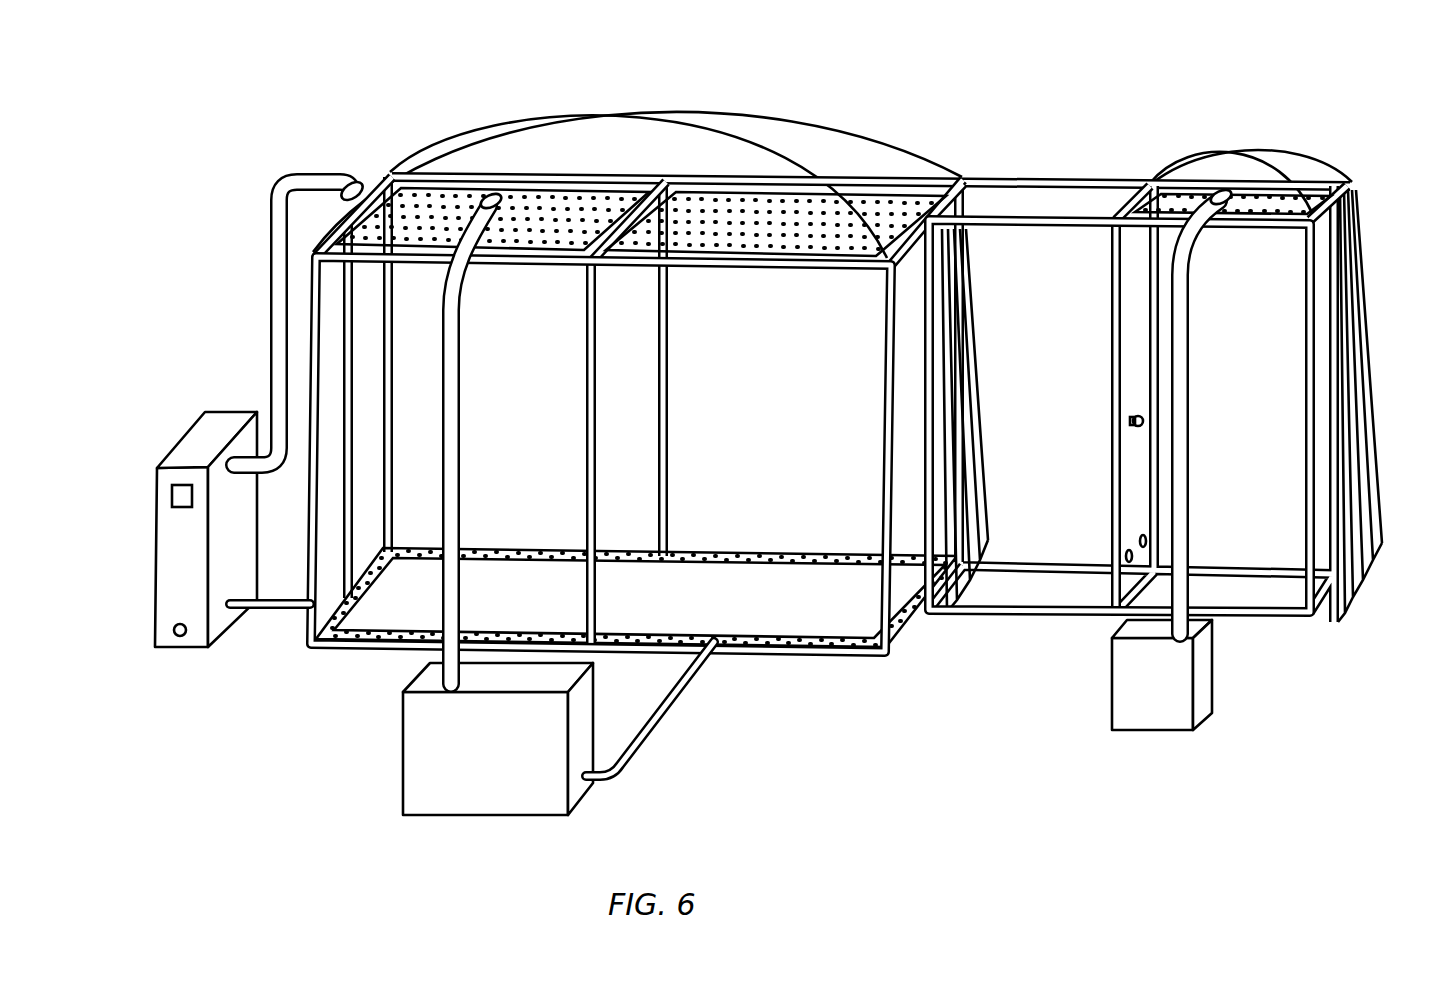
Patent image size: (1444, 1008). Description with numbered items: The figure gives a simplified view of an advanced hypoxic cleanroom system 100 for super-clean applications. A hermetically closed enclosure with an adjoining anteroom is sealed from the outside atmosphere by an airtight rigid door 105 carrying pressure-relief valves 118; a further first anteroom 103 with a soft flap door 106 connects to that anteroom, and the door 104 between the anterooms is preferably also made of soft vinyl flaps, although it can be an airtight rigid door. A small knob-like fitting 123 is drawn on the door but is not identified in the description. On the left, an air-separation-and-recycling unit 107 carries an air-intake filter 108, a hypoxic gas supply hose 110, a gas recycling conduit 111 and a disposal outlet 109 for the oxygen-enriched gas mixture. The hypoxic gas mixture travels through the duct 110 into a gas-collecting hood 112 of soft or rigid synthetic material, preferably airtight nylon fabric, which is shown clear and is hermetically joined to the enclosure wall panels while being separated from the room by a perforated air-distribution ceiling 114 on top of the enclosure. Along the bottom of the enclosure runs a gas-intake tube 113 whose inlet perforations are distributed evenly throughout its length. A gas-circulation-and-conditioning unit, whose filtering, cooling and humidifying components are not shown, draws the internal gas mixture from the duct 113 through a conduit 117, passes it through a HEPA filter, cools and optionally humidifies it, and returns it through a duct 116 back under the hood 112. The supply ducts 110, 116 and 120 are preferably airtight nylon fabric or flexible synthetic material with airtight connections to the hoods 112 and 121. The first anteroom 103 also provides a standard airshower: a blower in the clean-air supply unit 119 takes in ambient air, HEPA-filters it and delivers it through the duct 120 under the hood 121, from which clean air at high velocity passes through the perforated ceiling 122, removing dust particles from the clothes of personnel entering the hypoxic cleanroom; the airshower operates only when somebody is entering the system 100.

The advanced hypoxic cleanroom system 100 is at (292, 98).
The first anteroom 103 is at (1258, 598).
The door 104 is at (962, 312).
The airtight rigid door 105 is at (425, 765).
The soft flap door 106 is at (1346, 300).
The air-separation-and-recycling unit 107 is at (223, 410).
The air-intake filter 108 is at (172, 496).
The disposal outlet for oxygen-enriched gas mixture 109 is at (181, 637).
The hypoxic gas supply hose 110 is at (282, 236).
The gas recycling conduit 111 is at (279, 606).
The gas-collecting hood 112 is at (556, 138).
The gas-intake tube 113 is at (371, 580).
The perforated air-distribution ceiling 114 is at (845, 195).
The duct 116 is at (460, 345).
The conduit 117 is at (690, 694).
The pressure-relief valves 118 is at (1128, 550).
The clean-air supply unit 119 is at (1150, 706).
The duct 120 is at (1187, 356).
The hood 121 is at (1202, 172).
The perforated ceiling 122 is at (1292, 202).
The valve 123 is at (1143, 421).